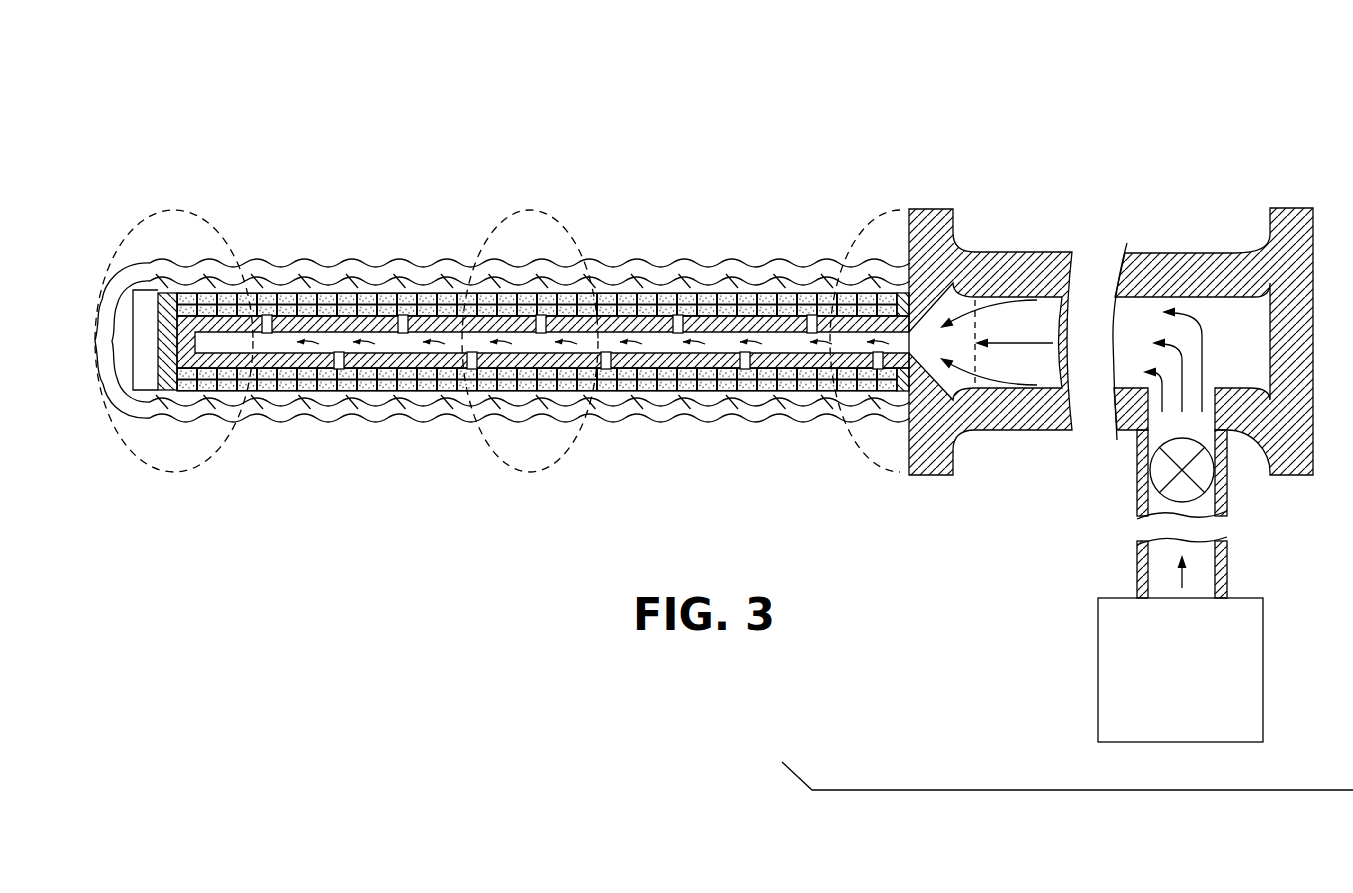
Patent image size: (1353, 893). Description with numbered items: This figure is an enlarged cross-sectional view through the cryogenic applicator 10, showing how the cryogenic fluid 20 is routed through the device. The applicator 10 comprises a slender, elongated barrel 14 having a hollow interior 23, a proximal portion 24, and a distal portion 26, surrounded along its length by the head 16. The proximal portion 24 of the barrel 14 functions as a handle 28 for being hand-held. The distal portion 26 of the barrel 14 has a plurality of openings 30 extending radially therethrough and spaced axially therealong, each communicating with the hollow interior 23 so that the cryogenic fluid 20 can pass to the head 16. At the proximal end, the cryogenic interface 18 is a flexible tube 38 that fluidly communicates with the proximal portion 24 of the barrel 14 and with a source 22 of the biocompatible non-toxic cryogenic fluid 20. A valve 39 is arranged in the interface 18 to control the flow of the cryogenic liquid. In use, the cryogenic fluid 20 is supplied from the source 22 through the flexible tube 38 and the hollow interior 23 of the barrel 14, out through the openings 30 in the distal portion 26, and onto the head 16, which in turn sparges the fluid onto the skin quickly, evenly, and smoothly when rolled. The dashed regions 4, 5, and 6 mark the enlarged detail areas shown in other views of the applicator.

The detail region of FIG. 4 is at (898, 199).
The detail region of FIG. 5 is at (183, 199).
The detail region of FIG. 6 is at (530, 199).
The cryogenic applicator 10 is at (698, 127).
The barrel 14 is at (1027, 242).
The head 16 is at (674, 251).
The cryogenic interface 18 is at (1155, 514).
The cryogenic fluid 20 is at (372, 345).
The source 22 is at (1195, 681).
The hollow interior 23 is at (1048, 331).
The proximal portion 24 is at (1213, 322).
The distal portion 26 is at (335, 322).
The handle 28 is at (1226, 242).
The openings 30 is at (398, 320).
The flexible tube 38 is at (1155, 514).
The valve 39 is at (1195, 463).